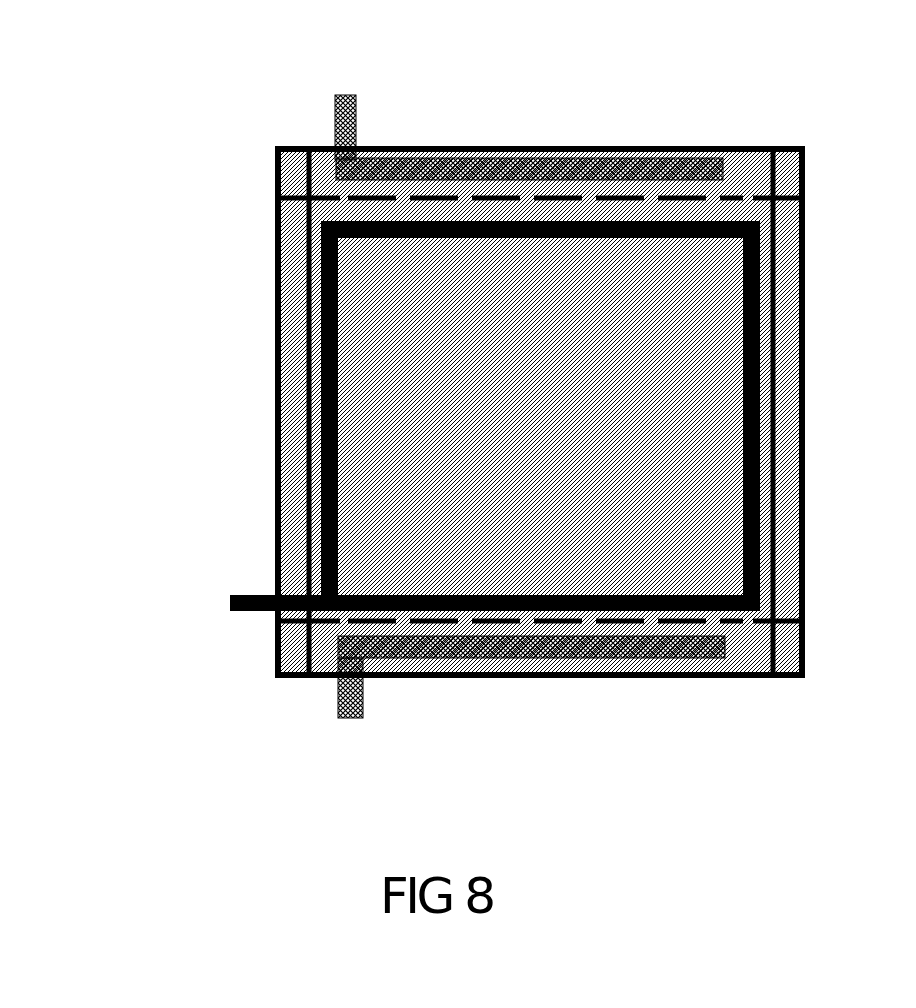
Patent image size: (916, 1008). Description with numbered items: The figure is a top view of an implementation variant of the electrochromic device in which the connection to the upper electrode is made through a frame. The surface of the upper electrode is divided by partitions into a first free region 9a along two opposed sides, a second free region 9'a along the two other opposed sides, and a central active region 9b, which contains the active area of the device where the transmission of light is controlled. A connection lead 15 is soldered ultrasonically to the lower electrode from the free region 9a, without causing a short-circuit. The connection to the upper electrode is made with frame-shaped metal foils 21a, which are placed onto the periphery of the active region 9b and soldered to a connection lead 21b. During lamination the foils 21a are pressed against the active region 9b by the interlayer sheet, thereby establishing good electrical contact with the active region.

The connection lead 15 is at (350, 98).
The first free region 9a is at (715, 164).
The second free region 9'a is at (528, 412).
The active region 9b is at (663, 467).
The frame-shaped metal foils 21a is at (315, 445).
The connection lead 21b is at (234, 605).